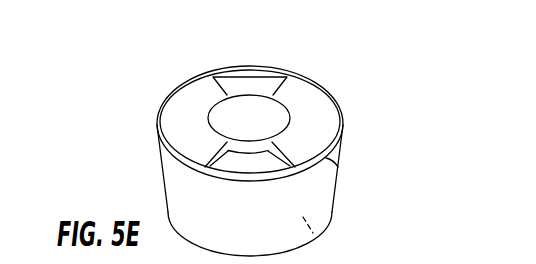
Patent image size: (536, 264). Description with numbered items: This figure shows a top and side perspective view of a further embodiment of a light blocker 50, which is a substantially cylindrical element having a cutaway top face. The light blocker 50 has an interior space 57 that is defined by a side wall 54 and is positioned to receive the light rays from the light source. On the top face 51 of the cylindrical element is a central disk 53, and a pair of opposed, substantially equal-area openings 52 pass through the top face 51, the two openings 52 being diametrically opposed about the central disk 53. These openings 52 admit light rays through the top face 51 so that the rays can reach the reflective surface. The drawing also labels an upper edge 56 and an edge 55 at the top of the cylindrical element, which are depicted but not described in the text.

The light blocker 50 is at (230, 38).
The top face 51 is at (323, 132).
The openings 52 is at (232, 160).
The central disk 53 is at (260, 132).
The side wall 54 is at (260, 231).
The upper edge 55 is at (338, 167).
The rim 56 is at (312, 83).
The interior space 57 is at (313, 233).